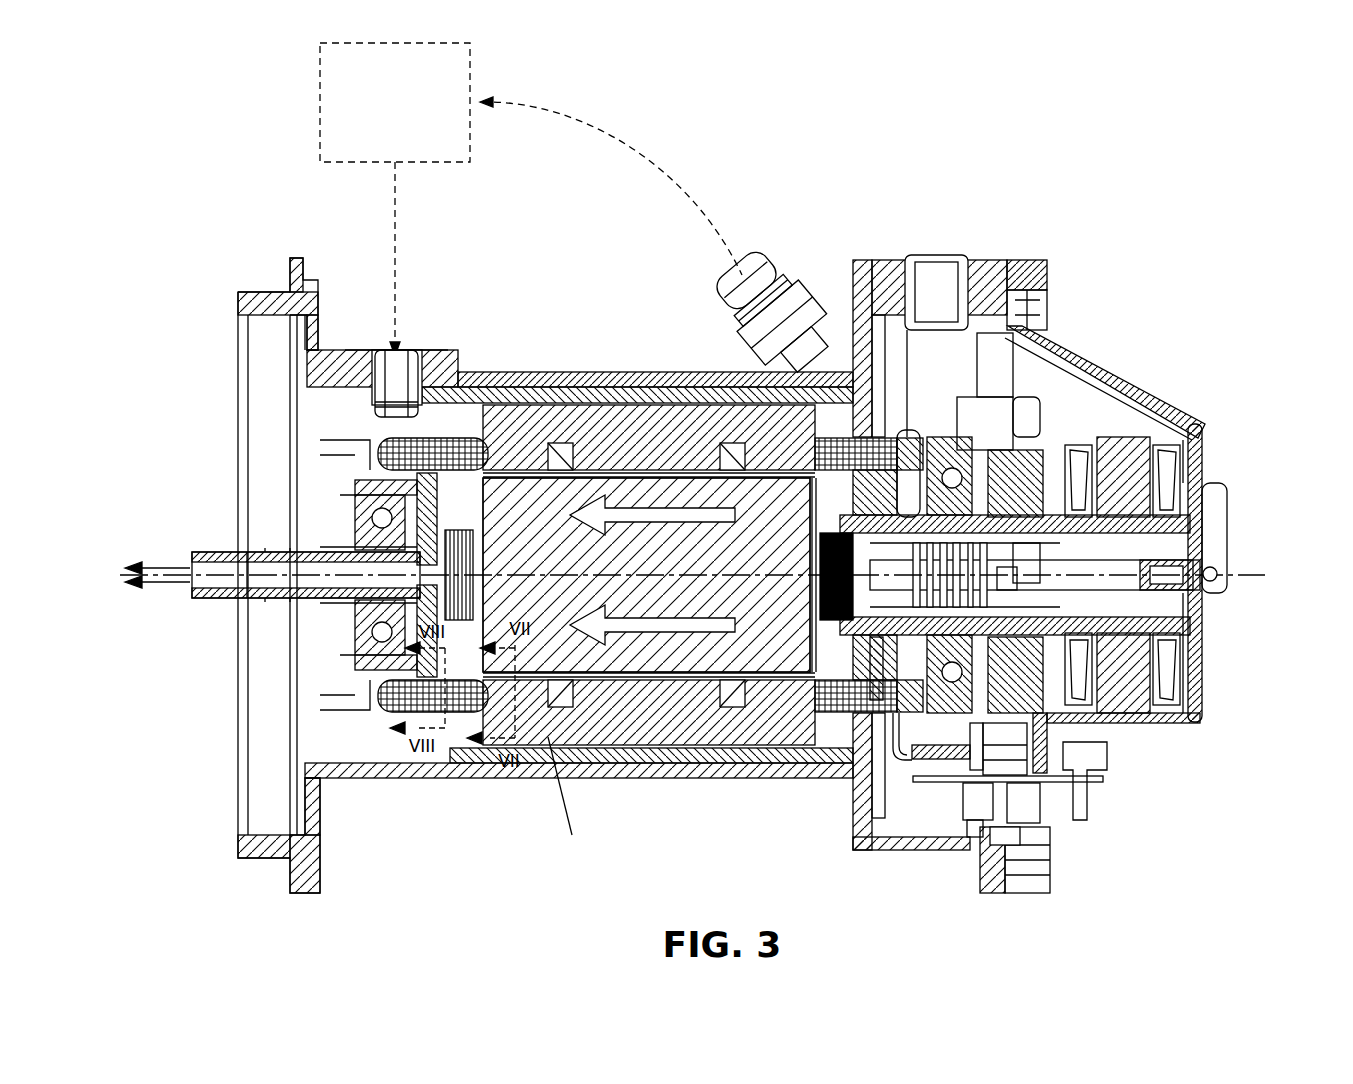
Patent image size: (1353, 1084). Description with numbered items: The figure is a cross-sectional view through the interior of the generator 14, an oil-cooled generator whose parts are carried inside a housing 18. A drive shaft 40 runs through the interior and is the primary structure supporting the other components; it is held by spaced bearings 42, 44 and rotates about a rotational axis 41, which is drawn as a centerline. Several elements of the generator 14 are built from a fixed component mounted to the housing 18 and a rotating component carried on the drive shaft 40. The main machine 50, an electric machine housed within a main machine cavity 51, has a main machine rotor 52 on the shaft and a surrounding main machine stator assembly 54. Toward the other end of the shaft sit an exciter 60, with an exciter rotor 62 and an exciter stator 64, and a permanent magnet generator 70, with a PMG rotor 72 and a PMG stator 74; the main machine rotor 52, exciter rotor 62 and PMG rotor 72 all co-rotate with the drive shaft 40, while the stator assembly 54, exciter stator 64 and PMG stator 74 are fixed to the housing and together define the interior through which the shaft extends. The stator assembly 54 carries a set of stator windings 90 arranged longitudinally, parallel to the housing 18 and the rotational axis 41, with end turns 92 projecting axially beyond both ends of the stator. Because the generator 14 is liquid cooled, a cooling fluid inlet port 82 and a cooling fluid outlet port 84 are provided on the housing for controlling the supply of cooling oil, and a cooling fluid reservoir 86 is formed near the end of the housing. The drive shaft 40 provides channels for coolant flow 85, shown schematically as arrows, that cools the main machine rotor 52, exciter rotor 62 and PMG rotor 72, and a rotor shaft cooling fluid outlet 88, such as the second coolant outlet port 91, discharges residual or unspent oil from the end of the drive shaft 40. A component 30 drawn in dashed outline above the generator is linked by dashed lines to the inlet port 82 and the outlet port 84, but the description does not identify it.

The generator 14 is at (490, 270).
The housing 18 is at (495, 382).
The controller 30 is at (320, 105).
The drive shaft 40 is at (266, 614).
The rotational axis 41 is at (1237, 588).
The bearing 42 is at (376, 634).
The bearing 44 is at (975, 838).
The main machine 50 is at (627, 511).
The main machine cavity 51 is at (440, 425).
The main machine rotor 52 is at (649, 664).
The main machine stator assembly 54 is at (610, 725).
The exciter 60 is at (1074, 542).
The exciter rotor 62 is at (985, 660).
The exciter stator 64 is at (1130, 703).
The permanent magnet generator 70 is at (1047, 425).
The PMG rotor 72 is at (1023, 688).
The PMG stator 74 is at (955, 680).
The cooling fluid inlet port 82 is at (393, 372).
The cooling fluid outlet port 84 is at (735, 280).
The fluid coolant flow 85 is at (612, 630).
The cooling fluid reservoir 86 is at (905, 795).
The rotor shaft cooling fluid outlet 88 is at (168, 565).
The stator windings 90 is at (760, 452).
The second coolant outlet port 91 is at (182, 553).
The end turns 92 is at (820, 272).